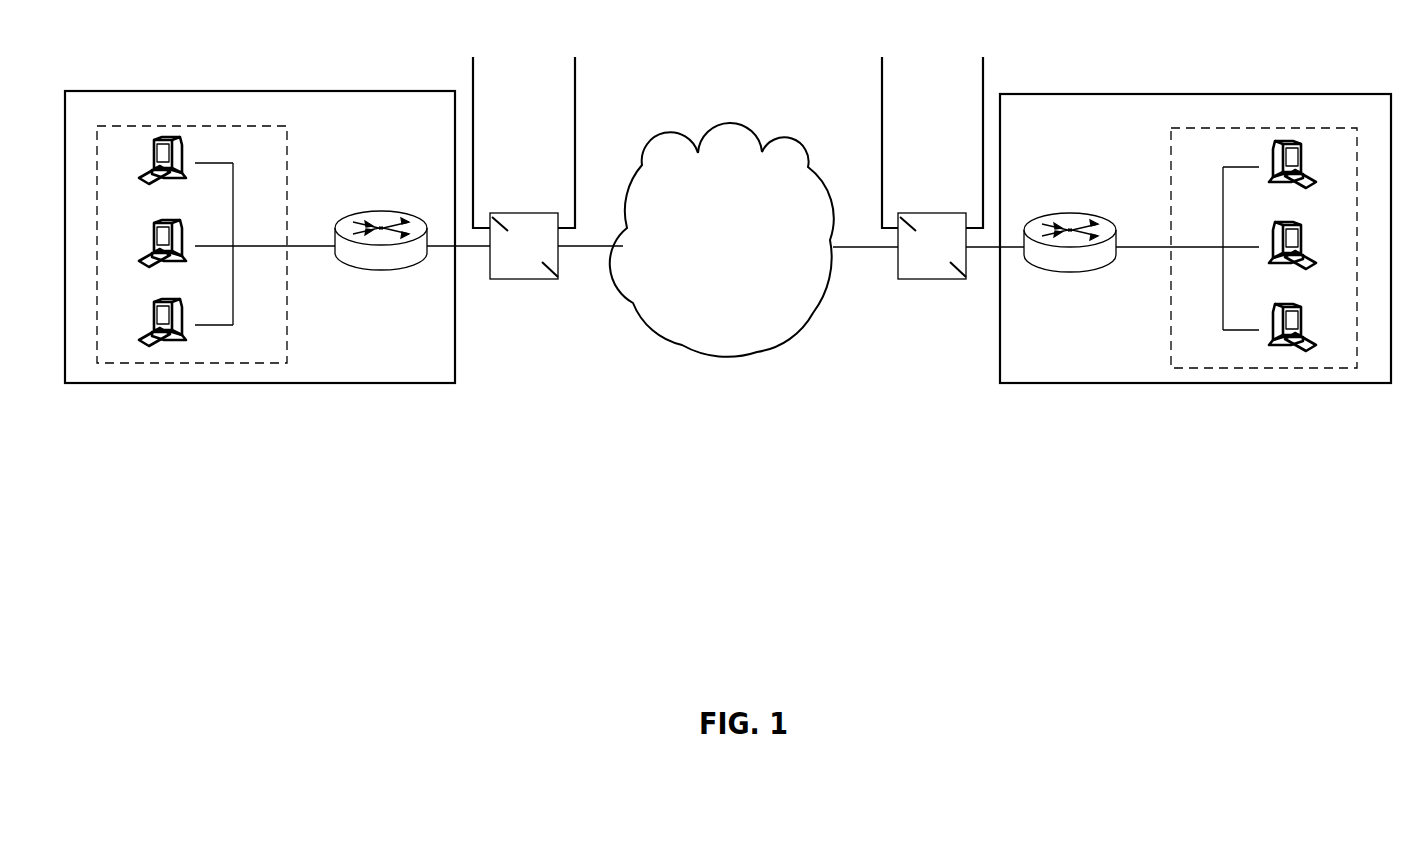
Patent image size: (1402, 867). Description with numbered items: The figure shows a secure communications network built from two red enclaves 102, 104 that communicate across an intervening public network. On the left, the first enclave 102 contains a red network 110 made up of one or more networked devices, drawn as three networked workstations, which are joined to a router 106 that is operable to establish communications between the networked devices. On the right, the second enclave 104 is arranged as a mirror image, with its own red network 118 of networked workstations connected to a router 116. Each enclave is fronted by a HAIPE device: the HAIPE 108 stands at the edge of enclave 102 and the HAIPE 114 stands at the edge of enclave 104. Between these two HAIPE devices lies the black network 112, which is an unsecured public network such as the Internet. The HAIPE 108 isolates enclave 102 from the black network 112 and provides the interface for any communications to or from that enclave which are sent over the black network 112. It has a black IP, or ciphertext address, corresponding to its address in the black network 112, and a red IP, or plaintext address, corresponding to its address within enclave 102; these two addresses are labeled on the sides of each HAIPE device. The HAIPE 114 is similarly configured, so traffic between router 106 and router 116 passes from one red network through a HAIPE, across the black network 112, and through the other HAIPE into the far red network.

The red enclave 102 is at (260, 250).
The red enclave 104 is at (1195, 253).
The router 106 is at (410, 252).
The HAIPE device 108 is at (532, 179).
The red network 110 is at (216, 231).
The black network 112 is at (722, 240).
The HAIPE device 114 is at (923, 179).
The router 116 is at (1050, 255).
The red network 118 is at (1236, 235).